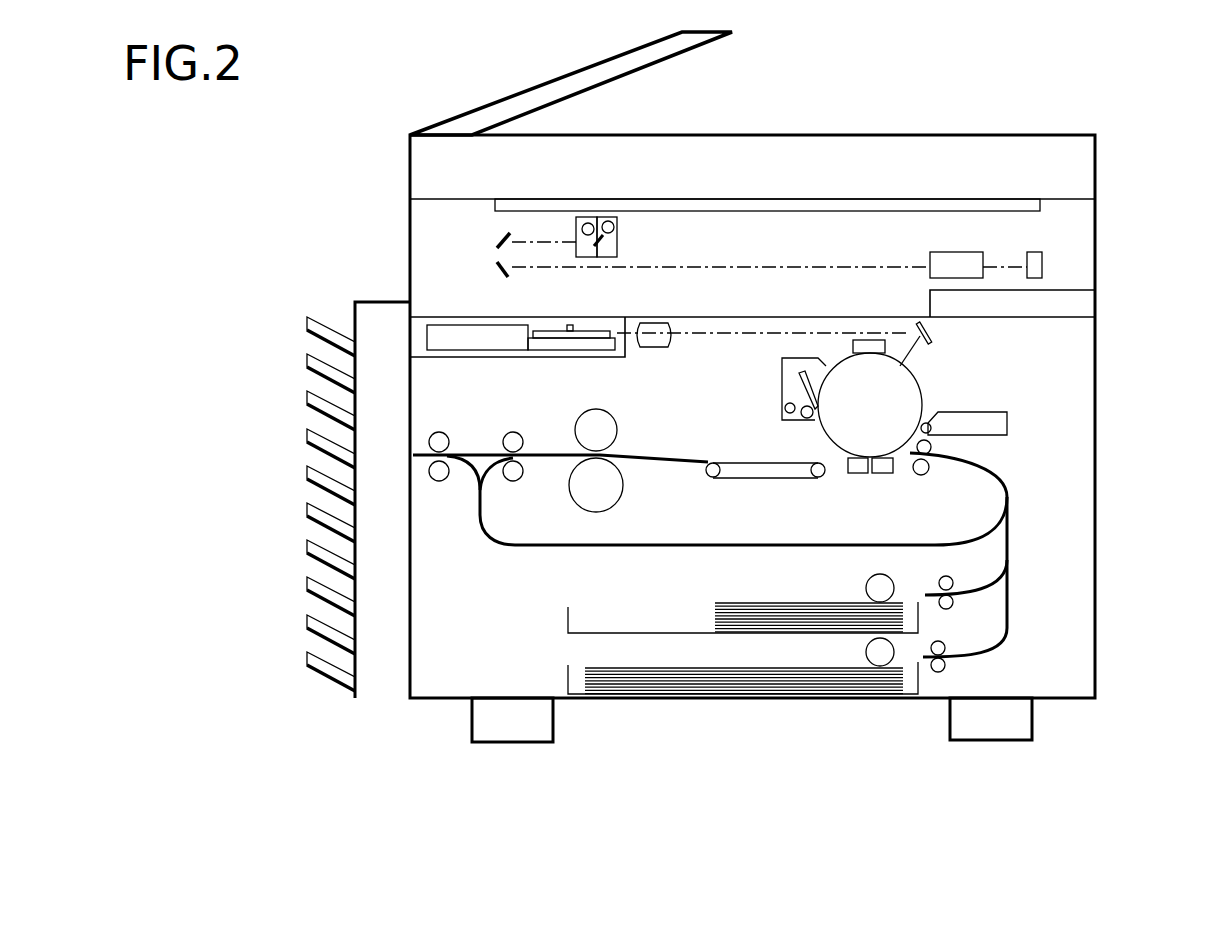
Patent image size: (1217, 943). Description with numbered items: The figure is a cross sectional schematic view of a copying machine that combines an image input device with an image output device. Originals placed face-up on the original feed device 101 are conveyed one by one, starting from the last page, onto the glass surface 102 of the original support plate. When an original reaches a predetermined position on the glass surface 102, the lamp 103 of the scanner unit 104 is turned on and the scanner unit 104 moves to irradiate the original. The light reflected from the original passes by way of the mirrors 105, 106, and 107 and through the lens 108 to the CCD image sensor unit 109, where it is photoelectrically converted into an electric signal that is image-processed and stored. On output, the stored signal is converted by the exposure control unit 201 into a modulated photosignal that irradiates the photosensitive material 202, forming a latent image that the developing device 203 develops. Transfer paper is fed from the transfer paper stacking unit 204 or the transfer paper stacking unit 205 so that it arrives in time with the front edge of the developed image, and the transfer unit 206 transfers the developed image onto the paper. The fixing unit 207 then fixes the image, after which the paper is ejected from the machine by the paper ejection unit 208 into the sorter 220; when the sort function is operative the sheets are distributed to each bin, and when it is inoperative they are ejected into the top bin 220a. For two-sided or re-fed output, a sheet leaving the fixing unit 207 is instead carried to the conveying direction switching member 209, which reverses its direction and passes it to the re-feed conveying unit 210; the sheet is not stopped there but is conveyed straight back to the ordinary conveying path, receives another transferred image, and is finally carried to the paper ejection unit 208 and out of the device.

The original feed device 101 is at (542, 83).
The glass surface 102 is at (998, 199).
The lamp 103 is at (610, 218).
The scanner unit 104 is at (585, 215).
The mirror 105 is at (590, 243).
The mirror 106 is at (497, 240).
The mirror 107 is at (497, 268).
The lens 108 is at (983, 254).
The CCD image sensor unit 109 is at (1042, 265).
The exposure control unit 201 is at (557, 331).
The photosensitive material 202 is at (897, 390).
The developing device 203 is at (1007, 423).
The transfer paper stacking unit 204 is at (920, 627).
The transfer paper stacking unit 205 is at (920, 685).
The transfer unit 206 is at (890, 478).
The fixing unit 207 is at (618, 470).
The paper ejection unit 208 is at (429, 472).
The conveying direction switching member 209 is at (477, 470).
The re-feed conveying unit 210 is at (510, 547).
The sorter 220 is at (385, 695).
The top bin 220a is at (307, 326).